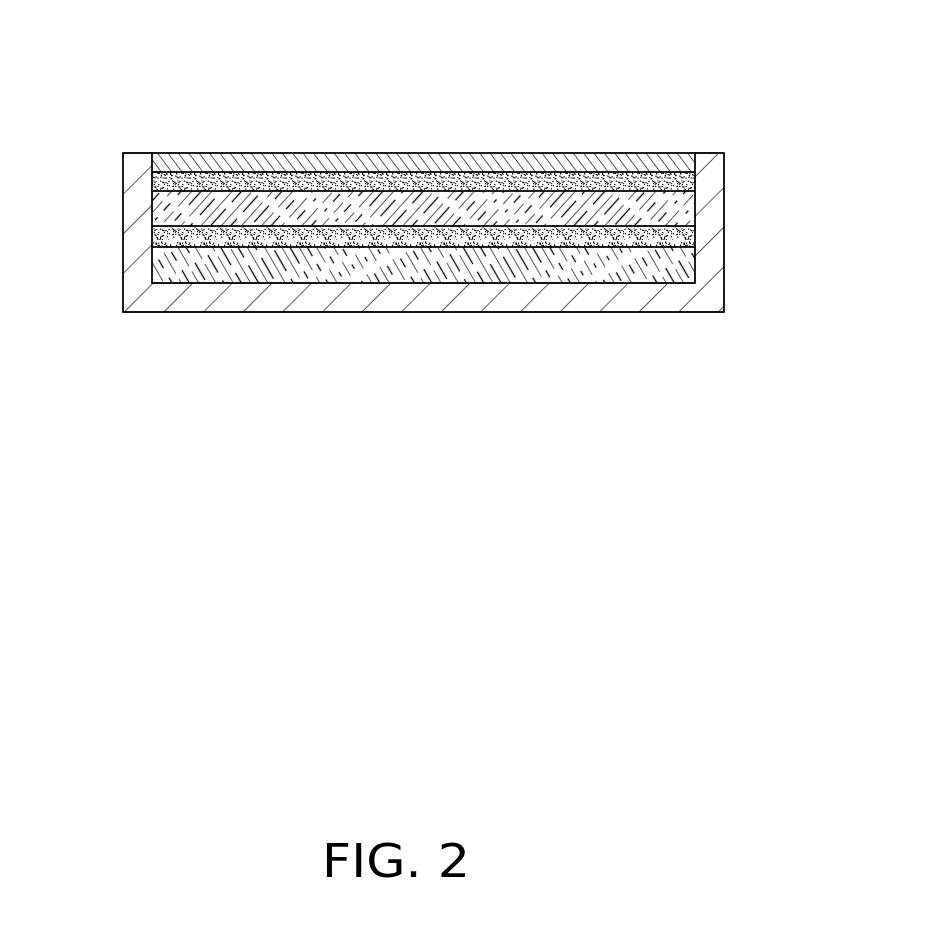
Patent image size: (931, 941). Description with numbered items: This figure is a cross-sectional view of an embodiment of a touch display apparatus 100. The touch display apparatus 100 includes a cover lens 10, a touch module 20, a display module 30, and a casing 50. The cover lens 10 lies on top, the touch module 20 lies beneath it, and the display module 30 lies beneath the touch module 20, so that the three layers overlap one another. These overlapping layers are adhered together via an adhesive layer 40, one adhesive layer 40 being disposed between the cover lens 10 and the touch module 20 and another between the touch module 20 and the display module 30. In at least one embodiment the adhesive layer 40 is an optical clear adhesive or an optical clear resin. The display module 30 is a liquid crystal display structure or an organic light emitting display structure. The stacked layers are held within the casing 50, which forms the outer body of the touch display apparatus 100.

The touch display apparatus 100 is at (333, 58).
The cover lens 10 is at (665, 160).
The touch module 20 is at (173, 213).
The display module 30 is at (173, 272).
The adhesive layer 40 is at (680, 181).
The casing 50 is at (202, 297).